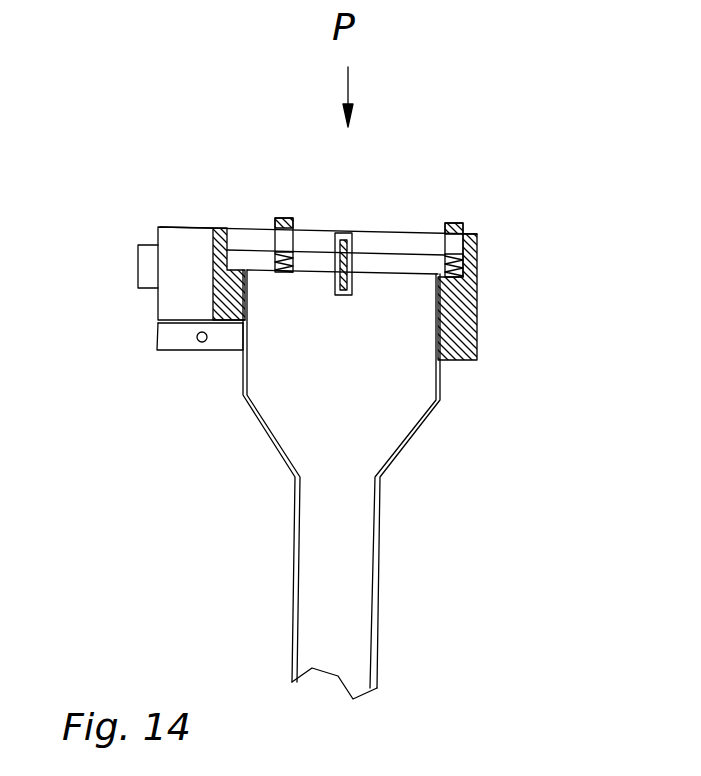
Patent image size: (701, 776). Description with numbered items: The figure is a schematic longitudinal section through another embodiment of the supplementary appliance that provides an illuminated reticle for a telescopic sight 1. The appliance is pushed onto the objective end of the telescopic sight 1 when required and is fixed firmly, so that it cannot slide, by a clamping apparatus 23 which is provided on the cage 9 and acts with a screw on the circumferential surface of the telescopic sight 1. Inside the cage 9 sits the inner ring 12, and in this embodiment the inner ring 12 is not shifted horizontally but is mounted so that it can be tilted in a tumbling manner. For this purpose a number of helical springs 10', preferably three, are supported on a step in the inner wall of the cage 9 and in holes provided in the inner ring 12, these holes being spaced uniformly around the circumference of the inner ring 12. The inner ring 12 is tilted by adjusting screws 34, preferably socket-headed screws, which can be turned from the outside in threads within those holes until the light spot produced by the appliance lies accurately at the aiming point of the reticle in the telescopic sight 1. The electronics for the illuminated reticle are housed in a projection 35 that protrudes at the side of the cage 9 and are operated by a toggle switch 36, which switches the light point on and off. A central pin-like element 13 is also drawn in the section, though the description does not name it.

The telescopic sight 1 is at (342, 512).
The cage 9 is at (477, 287).
The helical springs 10' is at (348, 253).
The inner ring 12 is at (400, 242).
The pin 13 is at (335, 282).
The clamping apparatus 23 is at (165, 350).
The adjusting screws 34 is at (287, 217).
The projection 35 is at (190, 260).
The toggle switch 36 is at (138, 250).